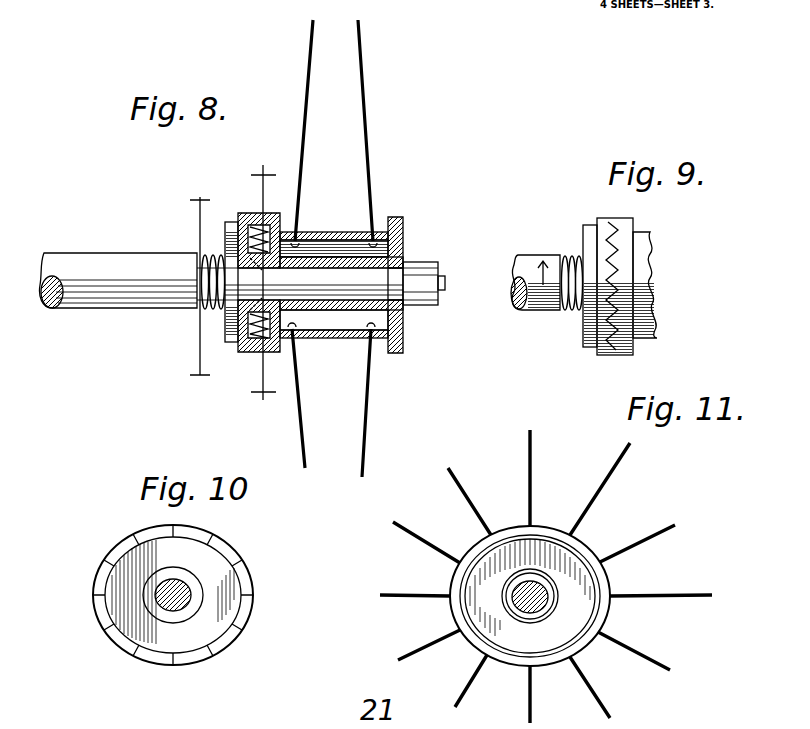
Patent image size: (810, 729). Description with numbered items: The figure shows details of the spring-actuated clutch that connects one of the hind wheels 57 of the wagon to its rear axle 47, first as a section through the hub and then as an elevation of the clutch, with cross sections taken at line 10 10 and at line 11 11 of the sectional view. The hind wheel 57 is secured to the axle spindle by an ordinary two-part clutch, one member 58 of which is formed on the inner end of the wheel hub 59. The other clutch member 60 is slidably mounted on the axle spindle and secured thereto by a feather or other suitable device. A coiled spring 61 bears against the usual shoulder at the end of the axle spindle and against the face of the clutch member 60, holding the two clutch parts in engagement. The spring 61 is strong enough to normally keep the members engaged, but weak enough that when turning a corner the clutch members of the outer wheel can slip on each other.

In FIG. 8, the section line 10 10 is at (270, 268).
In FIG. 8, the section line 11 11 is at (208, 267).
In FIG. 8, the rear axle 47 is at (86, 262).
In FIG. 9, the rear axle 47 is at (521, 256).
In FIG. 10, the rear axle 47 is at (190, 592).
In FIG. 11, the rear axle 47 is at (520, 603).
In FIG. 8, the hind wheels 57 is at (375, 382).
In FIG. 11, the hind wheels 57 is at (614, 490).
In FIG. 8, the clutch member 58 is at (276, 212).
In FIG. 9, the clutch member 58 is at (625, 229).
In FIG. 8, the wheel hub 59 is at (389, 218).
In FIG. 9, the wheel hub 59 is at (645, 255).
In FIG. 8, the clutch member 60 is at (240, 221).
In FIG. 9, the clutch member 60 is at (600, 218).
In FIG. 10, the clutch member 60 is at (231, 561).
In FIG. 11, the clutch member 60 is at (546, 527).
In FIG. 8, the coiled spring 61 is at (222, 258).
In FIG. 9, the coiled spring 61 is at (569, 257).
In FIG. 11, the coiled spring 61 is at (520, 616).